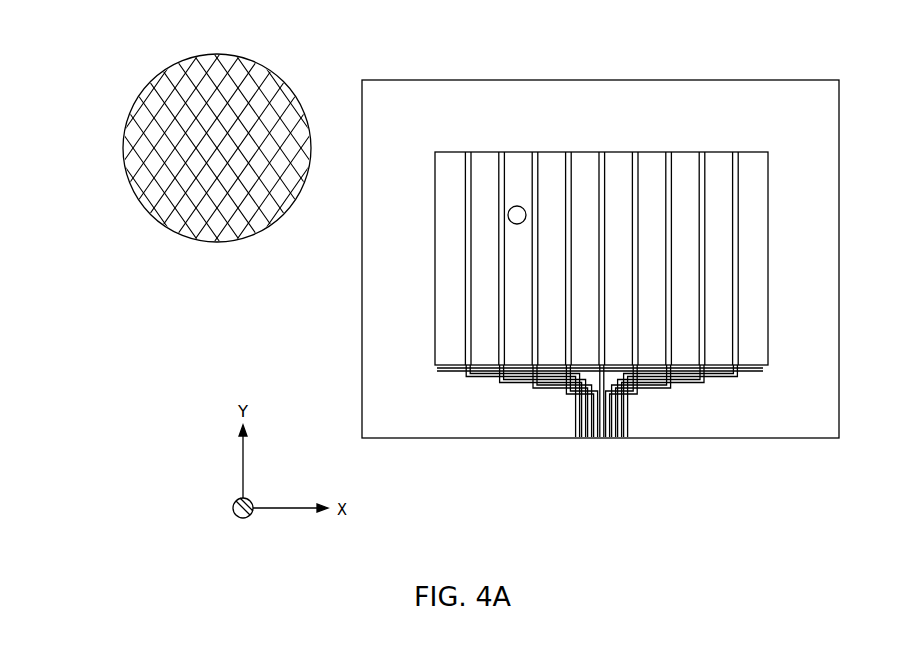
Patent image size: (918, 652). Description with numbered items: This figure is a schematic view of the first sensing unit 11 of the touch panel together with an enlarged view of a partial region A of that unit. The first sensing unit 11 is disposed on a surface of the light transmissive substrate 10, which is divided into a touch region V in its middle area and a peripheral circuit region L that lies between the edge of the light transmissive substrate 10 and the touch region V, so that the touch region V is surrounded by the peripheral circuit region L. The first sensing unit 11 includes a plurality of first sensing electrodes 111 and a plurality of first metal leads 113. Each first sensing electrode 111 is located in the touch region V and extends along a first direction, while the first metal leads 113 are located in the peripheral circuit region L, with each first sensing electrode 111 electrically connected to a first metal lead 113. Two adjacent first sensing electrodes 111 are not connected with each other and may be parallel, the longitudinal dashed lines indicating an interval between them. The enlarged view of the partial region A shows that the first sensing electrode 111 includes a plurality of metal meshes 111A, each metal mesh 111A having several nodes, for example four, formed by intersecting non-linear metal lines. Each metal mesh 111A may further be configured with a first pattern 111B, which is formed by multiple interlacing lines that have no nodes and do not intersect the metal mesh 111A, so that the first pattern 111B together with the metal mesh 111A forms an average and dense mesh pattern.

The light transmissive substrate 10 is at (627, 240).
The peripheral circuit region L is at (718, 97).
The touch region V is at (642, 246).
The first sensing unit 11 is at (592, 246).
The first sensing electrode 111 is at (450, 157).
The metal mesh 111A is at (193, 82).
The first pattern 111B is at (220, 127).
The first metal lead 113 is at (612, 413).
The partial region A is at (303, 183).